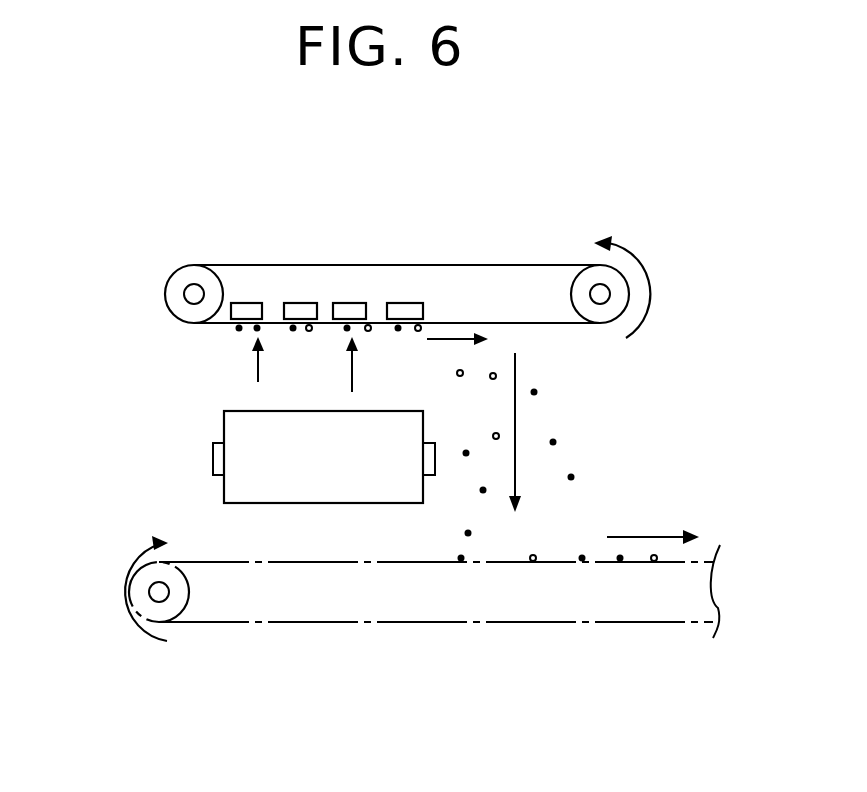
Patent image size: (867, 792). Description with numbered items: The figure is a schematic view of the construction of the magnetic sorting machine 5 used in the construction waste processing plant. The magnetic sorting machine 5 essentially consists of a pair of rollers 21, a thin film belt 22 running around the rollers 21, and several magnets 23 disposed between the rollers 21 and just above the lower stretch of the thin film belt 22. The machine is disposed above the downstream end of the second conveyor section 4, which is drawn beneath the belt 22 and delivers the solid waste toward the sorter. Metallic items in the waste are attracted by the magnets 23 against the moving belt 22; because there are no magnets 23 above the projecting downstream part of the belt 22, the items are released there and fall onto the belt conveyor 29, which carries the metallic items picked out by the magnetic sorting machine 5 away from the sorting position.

The second conveyor section 4 is at (198, 434).
The magnetic sorting machine 5 is at (489, 213).
The rollers 21 is at (186, 268).
The thin film belt 22 is at (323, 265).
The magnets 23 is at (413, 310).
The belt conveyor 29 is at (245, 625).